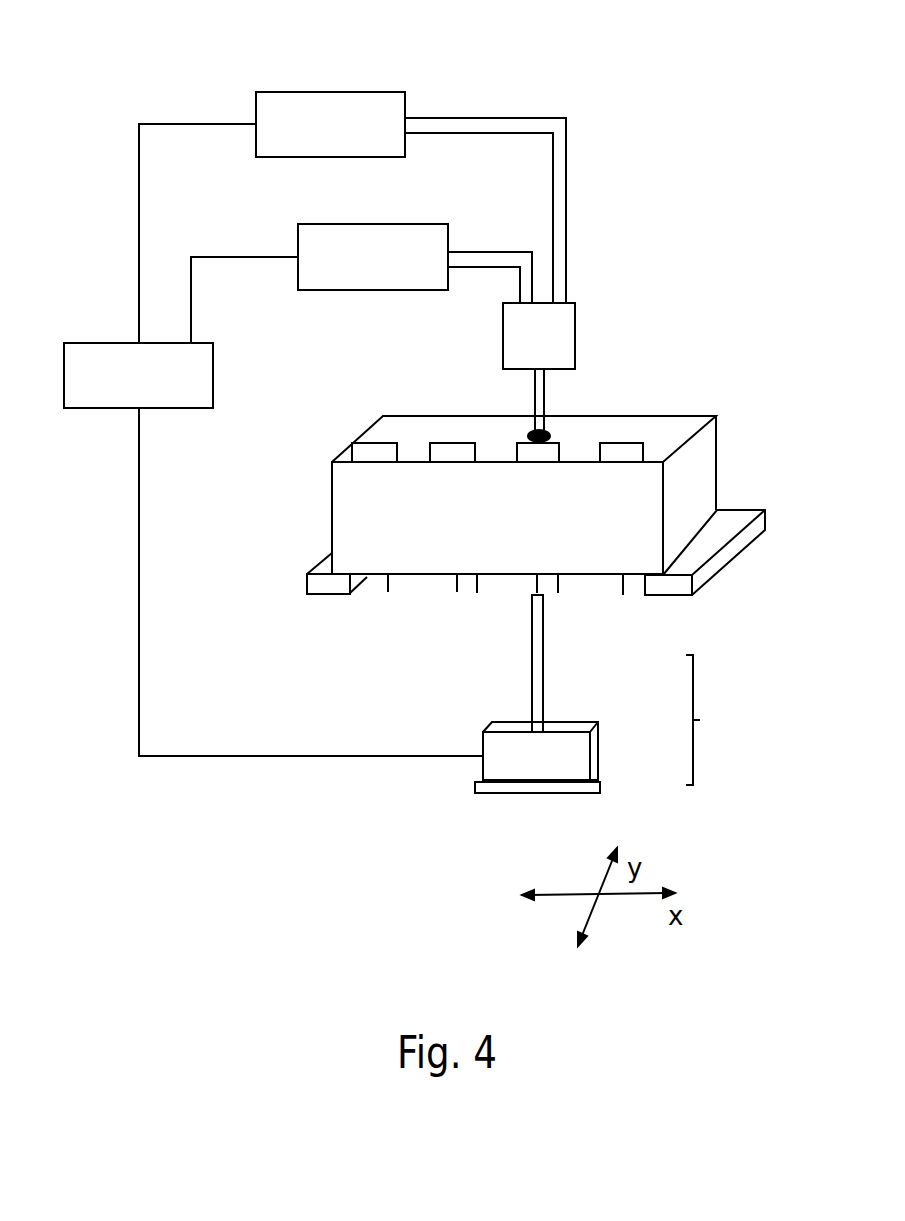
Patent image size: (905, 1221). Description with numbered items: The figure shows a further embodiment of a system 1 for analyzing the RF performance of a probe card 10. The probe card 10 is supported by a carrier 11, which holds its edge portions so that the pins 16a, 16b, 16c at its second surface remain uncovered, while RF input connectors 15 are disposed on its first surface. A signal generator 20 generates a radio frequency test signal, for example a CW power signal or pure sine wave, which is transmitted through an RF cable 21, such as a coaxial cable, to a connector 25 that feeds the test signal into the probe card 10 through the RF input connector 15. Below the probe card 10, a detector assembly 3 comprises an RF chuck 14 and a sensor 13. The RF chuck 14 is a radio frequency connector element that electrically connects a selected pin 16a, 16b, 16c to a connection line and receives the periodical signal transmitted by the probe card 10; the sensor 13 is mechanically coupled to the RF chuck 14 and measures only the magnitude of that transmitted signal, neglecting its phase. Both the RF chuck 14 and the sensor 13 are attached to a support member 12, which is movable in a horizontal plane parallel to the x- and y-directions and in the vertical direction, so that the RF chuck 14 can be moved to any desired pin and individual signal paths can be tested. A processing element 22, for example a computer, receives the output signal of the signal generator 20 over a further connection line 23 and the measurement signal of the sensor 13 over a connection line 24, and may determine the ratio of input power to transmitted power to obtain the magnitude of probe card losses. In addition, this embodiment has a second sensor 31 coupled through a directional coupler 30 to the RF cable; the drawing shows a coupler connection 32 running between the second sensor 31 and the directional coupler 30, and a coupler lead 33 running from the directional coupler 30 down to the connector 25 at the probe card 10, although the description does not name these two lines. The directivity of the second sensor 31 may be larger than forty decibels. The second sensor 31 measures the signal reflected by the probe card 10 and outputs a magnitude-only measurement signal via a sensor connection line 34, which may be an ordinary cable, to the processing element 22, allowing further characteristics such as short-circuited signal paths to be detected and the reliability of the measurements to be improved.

The system 1 is at (405, 843).
The detector assembly 3 is at (708, 720).
The probe card 10 is at (650, 461).
The carrier 11 is at (727, 537).
The support member 12 is at (600, 787).
The sensor 13 is at (598, 745).
The RF chuck 14 is at (543, 663).
The RF input connector 15 is at (622, 443).
The pin 16a is at (372, 577).
The pin 16b is at (388, 592).
The pin 16c is at (457, 592).
The signal generator 20 is at (312, 91).
The RF cable 21 is at (495, 120).
The processing element 22 is at (175, 408).
The further connection line 23 is at (177, 124).
The connection line 24 is at (187, 756).
The connector 25 is at (535, 437).
The directional coupler 30 is at (575, 332).
The second sensor 31 is at (372, 224).
The sensor connection 32 is at (495, 267).
The coupler probe 33 is at (545, 392).
The sensor connection line 34 is at (243, 257).